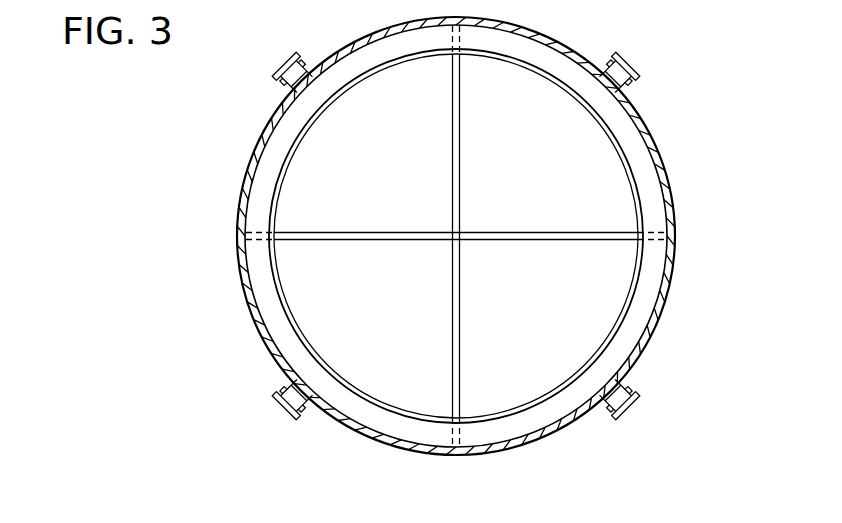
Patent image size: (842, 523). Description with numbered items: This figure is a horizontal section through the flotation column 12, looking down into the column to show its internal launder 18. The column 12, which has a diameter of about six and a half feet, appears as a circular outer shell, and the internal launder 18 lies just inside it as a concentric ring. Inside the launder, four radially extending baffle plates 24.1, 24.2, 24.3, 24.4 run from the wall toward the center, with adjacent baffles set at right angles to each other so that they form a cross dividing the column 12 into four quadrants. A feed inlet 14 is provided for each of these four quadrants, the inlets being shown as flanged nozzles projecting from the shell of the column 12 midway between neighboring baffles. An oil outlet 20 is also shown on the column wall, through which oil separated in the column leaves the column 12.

The flotation column 12 is at (243, 295).
The feed inlet 14 is at (290, 70).
The internal launder 18 is at (300, 112).
The oil outlet 20 is at (650, 53).
The baffle plate 24.1 is at (335, 233).
The baffle plate 24.2 is at (450, 118).
The baffle plate 24.3 is at (603, 232).
The baffle plate 24.4 is at (448, 318).